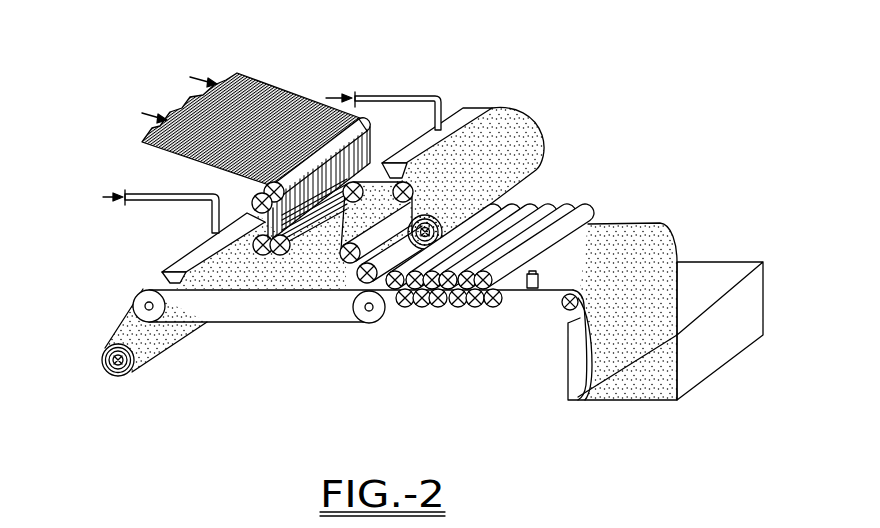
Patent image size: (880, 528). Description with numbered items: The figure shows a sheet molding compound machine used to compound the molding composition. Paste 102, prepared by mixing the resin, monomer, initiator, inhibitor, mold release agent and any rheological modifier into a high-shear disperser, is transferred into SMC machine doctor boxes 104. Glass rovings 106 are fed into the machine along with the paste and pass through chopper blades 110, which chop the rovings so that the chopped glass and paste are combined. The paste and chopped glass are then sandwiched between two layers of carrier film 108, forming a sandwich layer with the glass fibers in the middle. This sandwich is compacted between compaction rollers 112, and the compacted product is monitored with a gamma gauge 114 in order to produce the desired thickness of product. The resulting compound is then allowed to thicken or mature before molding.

The paste 102 is at (148, 192).
The SMC machine doctor boxes 104 is at (180, 264).
The glass rovings 106 is at (267, 91).
The carrier film 108 is at (533, 153).
The chopper blades 110 is at (279, 252).
The compaction rollers 112 is at (441, 308).
The gamma gauge 114 is at (532, 290).